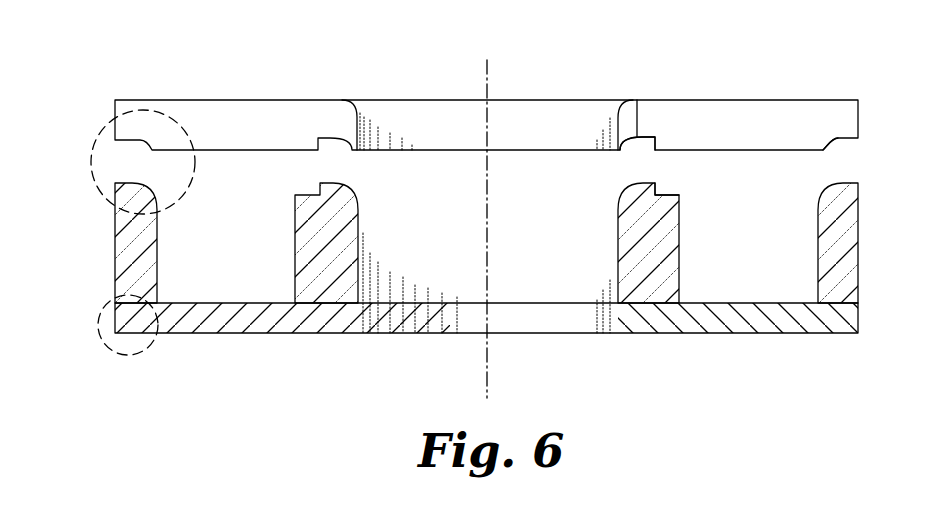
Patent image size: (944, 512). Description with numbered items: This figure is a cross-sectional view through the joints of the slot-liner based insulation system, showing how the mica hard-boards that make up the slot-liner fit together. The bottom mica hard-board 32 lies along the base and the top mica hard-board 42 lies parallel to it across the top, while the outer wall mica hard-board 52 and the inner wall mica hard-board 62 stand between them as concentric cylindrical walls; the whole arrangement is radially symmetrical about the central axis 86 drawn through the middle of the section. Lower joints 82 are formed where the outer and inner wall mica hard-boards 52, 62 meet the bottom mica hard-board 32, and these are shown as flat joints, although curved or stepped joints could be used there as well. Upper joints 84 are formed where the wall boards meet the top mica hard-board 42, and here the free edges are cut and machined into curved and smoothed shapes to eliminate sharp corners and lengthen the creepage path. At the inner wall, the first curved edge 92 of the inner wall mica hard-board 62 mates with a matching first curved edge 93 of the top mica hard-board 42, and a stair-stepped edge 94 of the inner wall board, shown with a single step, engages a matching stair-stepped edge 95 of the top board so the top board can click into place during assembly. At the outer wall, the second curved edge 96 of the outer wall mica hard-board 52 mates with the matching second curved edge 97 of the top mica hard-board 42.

The bottom mica hard-board 32 is at (400, 333).
The top mica hard-board 42 is at (237, 100).
The outer wall mica hard-board 52 is at (115, 245).
The inner wall mica hard-board 62 is at (358, 248).
The lower joint 82 is at (100, 338).
The upper joint 84 is at (115, 122).
The central axis 86 is at (487, 72).
The first curved edge 92 is at (630, 187).
The first curved edge 93 is at (633, 100).
The stair-stepped edge 94 is at (658, 184).
The stair-stepped edge 95 is at (658, 138).
The second curved edge 96 is at (823, 195).
The second curved edge 97 is at (822, 140).